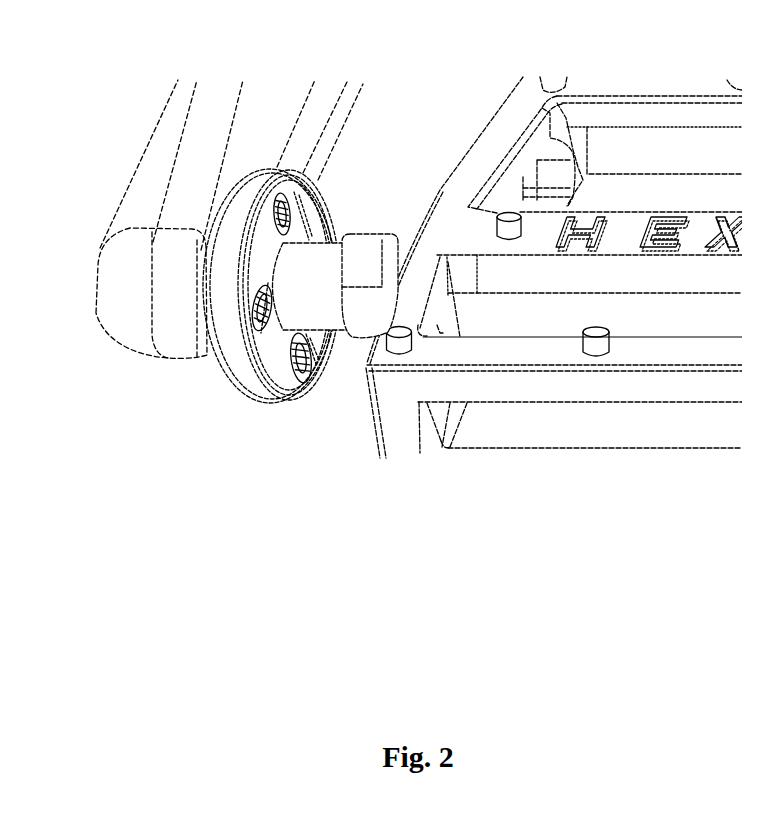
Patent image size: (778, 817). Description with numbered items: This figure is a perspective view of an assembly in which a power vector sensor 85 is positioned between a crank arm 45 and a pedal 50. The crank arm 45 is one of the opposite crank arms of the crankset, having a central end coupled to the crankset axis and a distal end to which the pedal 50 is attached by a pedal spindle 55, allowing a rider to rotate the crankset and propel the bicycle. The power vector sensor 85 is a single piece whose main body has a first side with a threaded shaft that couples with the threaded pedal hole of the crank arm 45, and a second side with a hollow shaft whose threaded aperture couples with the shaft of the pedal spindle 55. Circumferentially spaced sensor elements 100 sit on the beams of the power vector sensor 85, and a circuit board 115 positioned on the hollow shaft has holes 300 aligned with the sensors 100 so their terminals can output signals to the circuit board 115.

The crank arm 45 is at (117, 297).
The pedal 50 is at (395, 440).
The pedal spindle 55 is at (370, 253).
The power vector sensor 85 is at (253, 178).
The sensor elements 100 is at (282, 212).
The circuit board 115 is at (268, 342).
The holes 300 is at (290, 222).